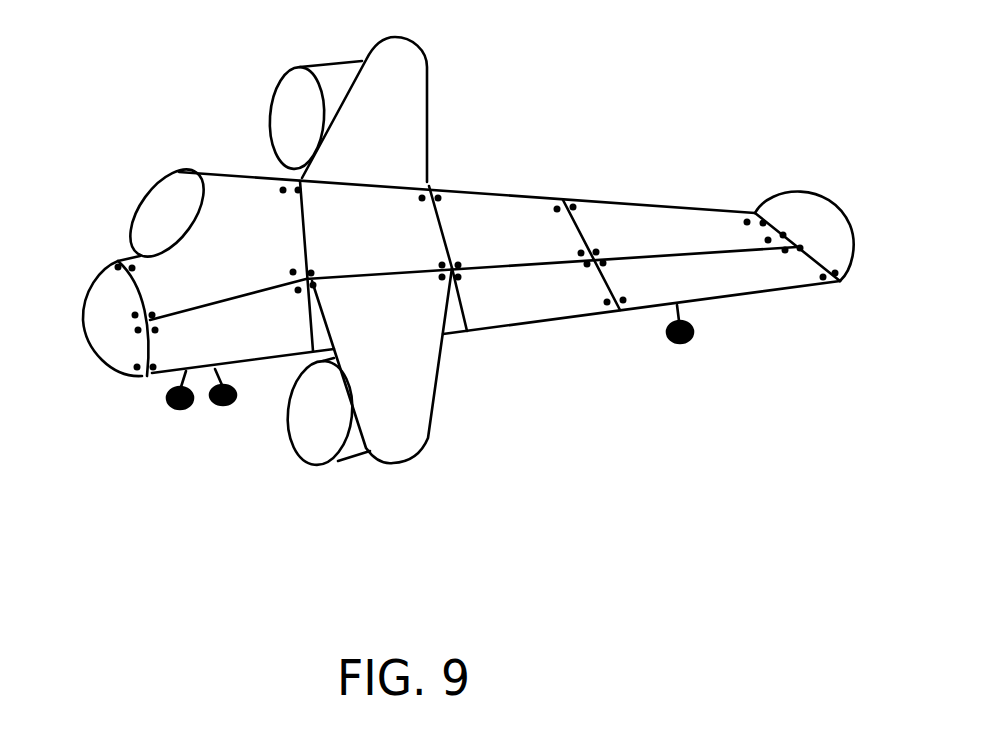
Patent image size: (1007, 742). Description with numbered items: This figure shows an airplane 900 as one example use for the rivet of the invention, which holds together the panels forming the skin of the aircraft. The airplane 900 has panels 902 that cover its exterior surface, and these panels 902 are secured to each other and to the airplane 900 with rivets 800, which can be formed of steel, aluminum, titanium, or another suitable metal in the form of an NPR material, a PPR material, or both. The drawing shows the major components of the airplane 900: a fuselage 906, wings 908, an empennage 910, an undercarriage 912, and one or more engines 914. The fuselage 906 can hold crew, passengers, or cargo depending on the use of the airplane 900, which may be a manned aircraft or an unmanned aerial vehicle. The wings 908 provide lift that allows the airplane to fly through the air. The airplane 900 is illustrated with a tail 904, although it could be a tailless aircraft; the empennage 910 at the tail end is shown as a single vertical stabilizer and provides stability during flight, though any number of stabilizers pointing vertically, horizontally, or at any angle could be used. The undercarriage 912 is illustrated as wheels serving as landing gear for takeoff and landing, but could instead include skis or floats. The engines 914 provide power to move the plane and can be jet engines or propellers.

The airplane 900 is at (197, 124).
The fuselage 906 is at (392, 210).
The rivet 800 is at (564, 199).
The panels 902 is at (568, 302).
The tail 904 is at (734, 186).
The empennage 910 is at (832, 228).
The wings 908 is at (394, 464).
The engines 914 is at (304, 459).
The undercarriage 912 is at (177, 409).